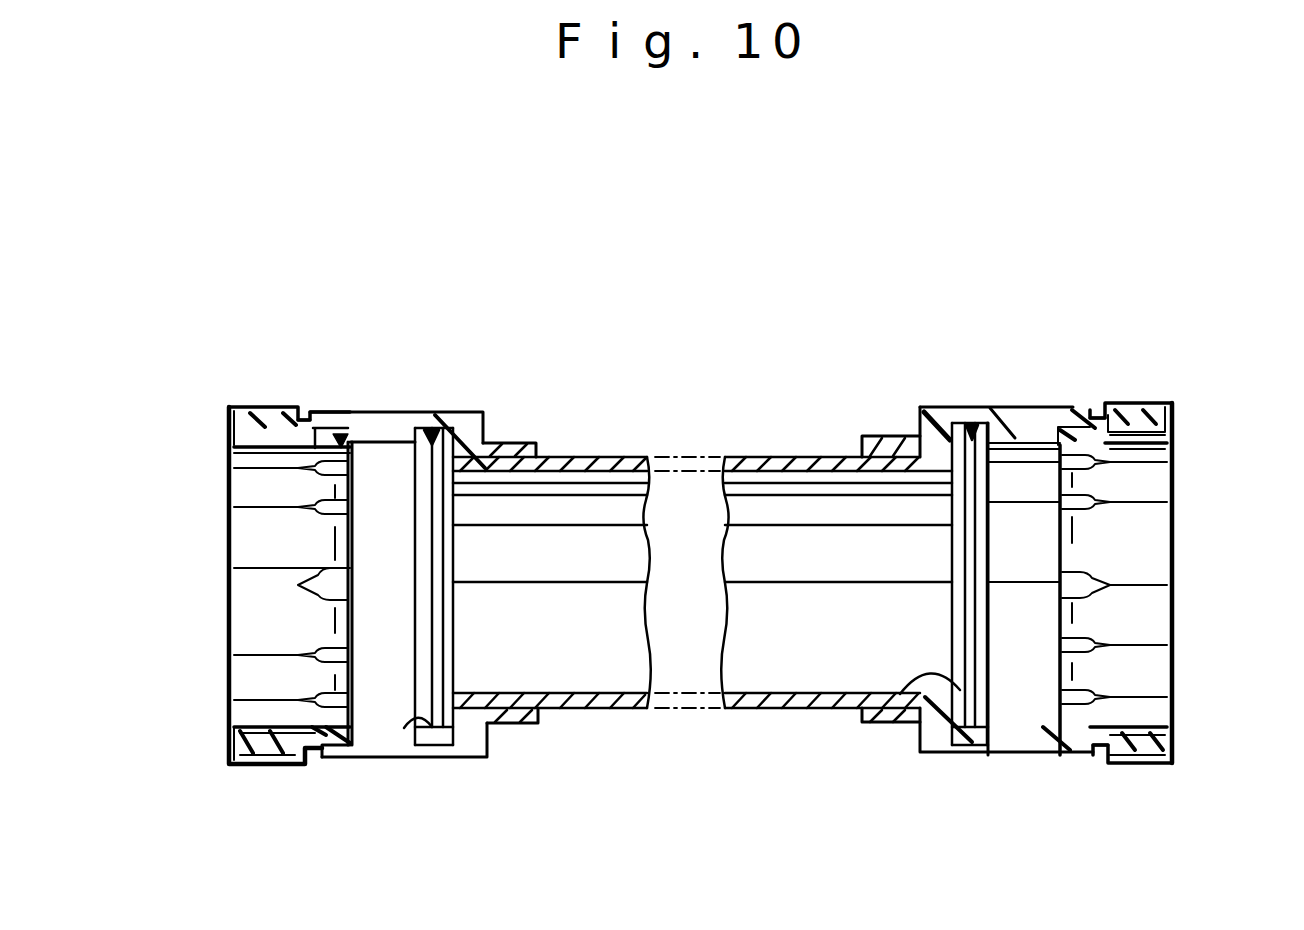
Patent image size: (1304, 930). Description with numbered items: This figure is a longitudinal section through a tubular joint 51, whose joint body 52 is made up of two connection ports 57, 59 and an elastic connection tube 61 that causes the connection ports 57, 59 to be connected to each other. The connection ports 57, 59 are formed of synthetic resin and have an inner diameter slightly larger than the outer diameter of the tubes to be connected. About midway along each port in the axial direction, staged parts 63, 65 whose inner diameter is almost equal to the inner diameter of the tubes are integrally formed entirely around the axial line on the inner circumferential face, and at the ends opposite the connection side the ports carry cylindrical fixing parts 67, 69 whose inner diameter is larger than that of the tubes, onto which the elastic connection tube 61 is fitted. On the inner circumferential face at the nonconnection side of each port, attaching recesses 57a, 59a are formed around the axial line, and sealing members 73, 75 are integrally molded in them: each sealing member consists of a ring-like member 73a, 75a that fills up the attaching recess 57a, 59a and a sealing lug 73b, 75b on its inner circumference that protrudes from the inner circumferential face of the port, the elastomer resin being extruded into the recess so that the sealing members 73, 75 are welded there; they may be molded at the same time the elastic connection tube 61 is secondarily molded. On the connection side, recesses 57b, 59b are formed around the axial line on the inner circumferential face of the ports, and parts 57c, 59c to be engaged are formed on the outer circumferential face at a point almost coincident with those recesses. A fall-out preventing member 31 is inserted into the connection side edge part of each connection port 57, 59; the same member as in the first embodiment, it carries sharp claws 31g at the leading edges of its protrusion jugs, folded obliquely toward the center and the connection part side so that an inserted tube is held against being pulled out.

The fall-out preventing member 31 is at (222, 418).
The claw 31g is at (318, 726).
The tubular joint 51 is at (738, 307).
The joint body 52 is at (858, 388).
The connection port 57 is at (395, 420).
The attaching recess 57a is at (428, 450).
The upper portion of body 57 57b is at (340, 425).
The part to be engaged 57c is at (304, 410).
The connection port 59 is at (1028, 427).
The attaching recess 59a is at (1017, 425).
The notch of body 59 59b is at (1092, 402).
The part to be engaged 59c is at (1097, 760).
The elastic connection tube 61 is at (623, 456).
The staged part 63 is at (485, 442).
The staged part 65 is at (908, 722).
The cylindrical fixing part 67 is at (513, 445).
The cylindrical fixing part 69 is at (905, 723).
The sealing member 73 is at (462, 665).
The ring-like member 73a is at (438, 748).
The sealing lug 73b is at (397, 760).
The sealing member 75 is at (958, 565).
The ring-like member 75a is at (962, 740).
The sealing lug 75b is at (988, 714).